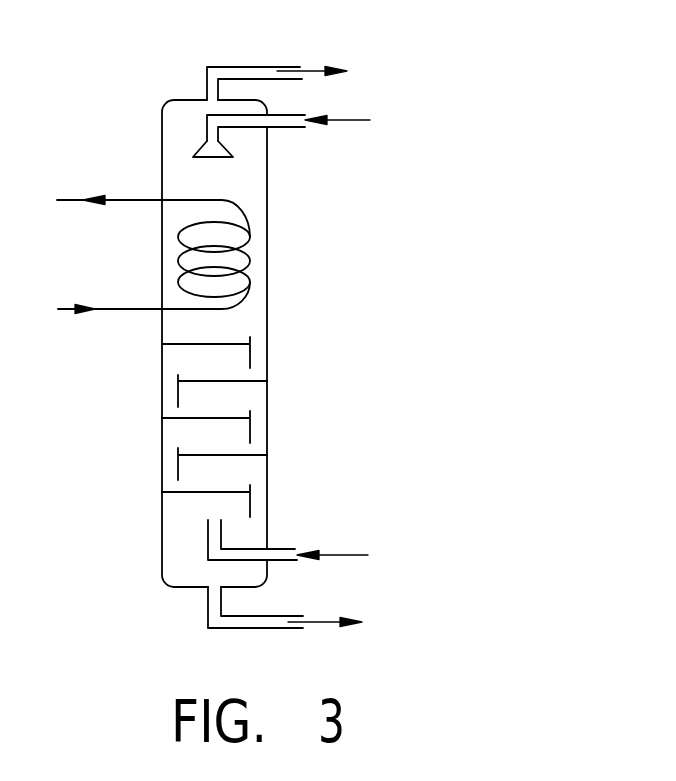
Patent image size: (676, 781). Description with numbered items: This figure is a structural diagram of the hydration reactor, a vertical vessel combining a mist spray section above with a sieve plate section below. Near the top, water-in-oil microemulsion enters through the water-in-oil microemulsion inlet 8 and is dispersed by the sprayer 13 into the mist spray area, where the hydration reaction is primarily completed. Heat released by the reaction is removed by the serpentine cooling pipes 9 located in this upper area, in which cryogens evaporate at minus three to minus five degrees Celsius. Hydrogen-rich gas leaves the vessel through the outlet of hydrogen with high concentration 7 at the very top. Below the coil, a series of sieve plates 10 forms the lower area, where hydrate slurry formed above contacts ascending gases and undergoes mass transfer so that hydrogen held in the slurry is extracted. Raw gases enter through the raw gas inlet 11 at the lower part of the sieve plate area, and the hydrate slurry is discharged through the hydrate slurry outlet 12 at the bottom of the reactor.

The outlet of hydrogen with high concentration 7 is at (270, 67).
The water-in-oil microemulsion inlet 8 is at (283, 128).
The serpentine cooling pipes 9 is at (240, 250).
The sieve plates 10 is at (222, 418).
The raw gas inlet 11 is at (282, 547).
The hydrate slurry outlet 12 is at (275, 613).
The sprayer 13 is at (197, 152).